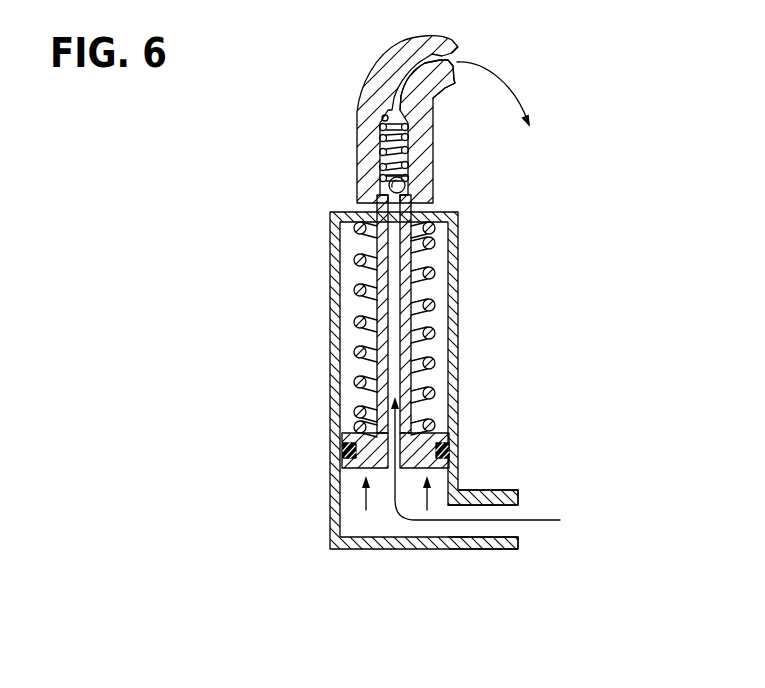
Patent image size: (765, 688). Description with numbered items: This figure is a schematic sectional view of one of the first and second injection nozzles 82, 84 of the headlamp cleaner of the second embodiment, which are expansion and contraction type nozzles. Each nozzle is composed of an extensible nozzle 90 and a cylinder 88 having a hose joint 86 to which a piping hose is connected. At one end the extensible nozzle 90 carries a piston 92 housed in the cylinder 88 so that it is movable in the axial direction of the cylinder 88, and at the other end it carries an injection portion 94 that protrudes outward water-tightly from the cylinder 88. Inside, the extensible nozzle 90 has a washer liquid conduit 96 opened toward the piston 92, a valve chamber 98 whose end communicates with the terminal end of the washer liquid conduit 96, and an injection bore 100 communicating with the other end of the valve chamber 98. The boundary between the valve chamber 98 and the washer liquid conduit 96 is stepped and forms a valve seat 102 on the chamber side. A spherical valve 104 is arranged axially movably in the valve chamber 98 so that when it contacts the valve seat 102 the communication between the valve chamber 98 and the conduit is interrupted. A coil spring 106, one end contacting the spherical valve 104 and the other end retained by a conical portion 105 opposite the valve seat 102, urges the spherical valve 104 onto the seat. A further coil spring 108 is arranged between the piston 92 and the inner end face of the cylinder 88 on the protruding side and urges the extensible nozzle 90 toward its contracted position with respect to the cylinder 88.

The first injection nozzle 82 is at (459, 316).
The second injection nozzle 84 is at (459, 316).
The hose joint 86 is at (500, 540).
The cylinder 88 is at (457, 412).
The extensible nozzle 90 is at (428, 376).
The piston 92 is at (362, 458).
The injection portion 94 is at (428, 100).
The washer liquid conduit 96 is at (393, 369).
The valve chamber 98 is at (382, 142).
The injection bore 100 is at (458, 56).
The valve seat 102 is at (407, 186).
The spherical valve 104 is at (411, 177).
The conical portion 105 is at (382, 116).
The coil spring 106 is at (410, 147).
The coil spring 108 is at (440, 258).